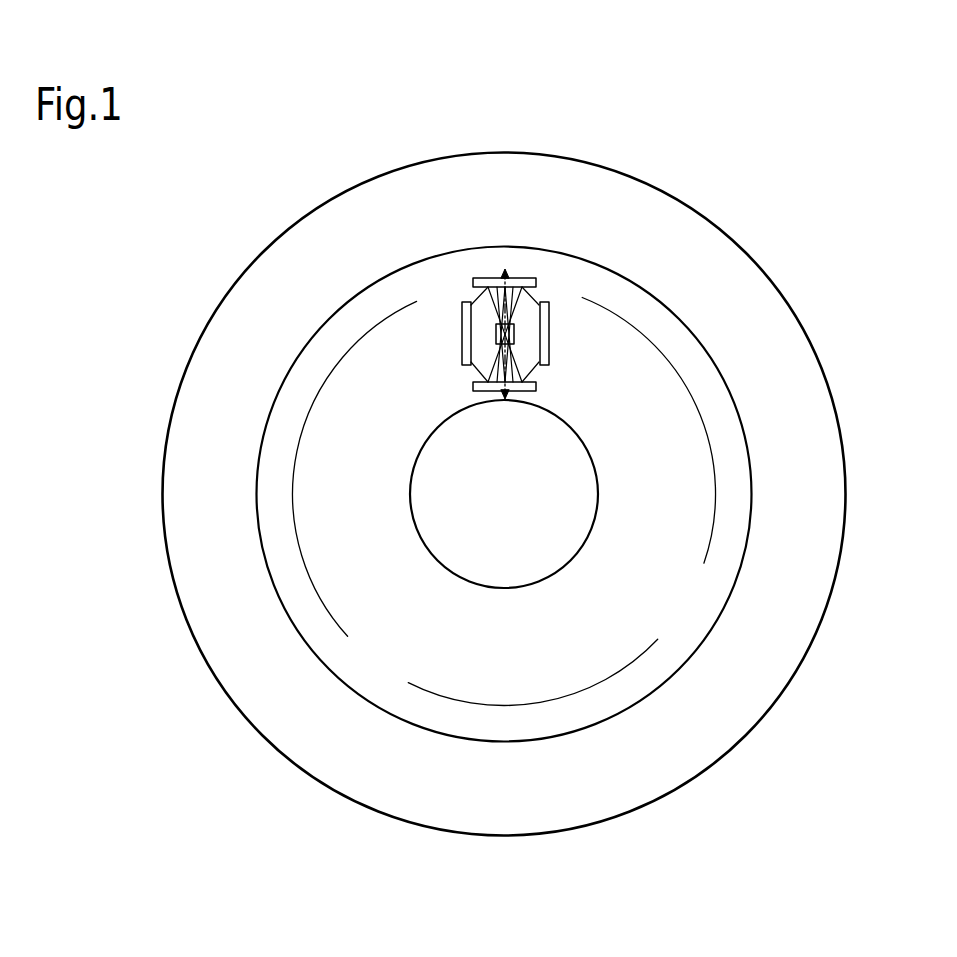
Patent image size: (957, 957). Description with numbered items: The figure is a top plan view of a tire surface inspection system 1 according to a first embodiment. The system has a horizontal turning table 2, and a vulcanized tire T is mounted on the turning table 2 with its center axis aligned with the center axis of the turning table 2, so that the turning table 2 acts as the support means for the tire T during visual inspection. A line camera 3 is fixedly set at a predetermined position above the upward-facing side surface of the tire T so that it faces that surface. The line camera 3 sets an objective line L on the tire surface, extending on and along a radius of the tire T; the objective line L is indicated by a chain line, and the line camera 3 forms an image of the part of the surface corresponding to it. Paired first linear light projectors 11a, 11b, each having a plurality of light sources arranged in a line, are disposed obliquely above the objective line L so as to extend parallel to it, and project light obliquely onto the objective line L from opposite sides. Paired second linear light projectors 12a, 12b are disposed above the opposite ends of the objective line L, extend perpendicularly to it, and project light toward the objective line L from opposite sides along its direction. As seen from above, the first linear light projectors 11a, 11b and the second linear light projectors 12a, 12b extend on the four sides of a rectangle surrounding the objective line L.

The tire surface inspection system 1 is at (356, 118).
The turning table 2 is at (778, 282).
The tire T is at (308, 338).
The line camera 3 is at (514, 329).
The first linear light projector 11a is at (467, 337).
The first linear light projector 11b is at (545, 333).
The second linear light projector 12a is at (485, 283).
The second linear light projector 12b is at (522, 388).
The objective line L is at (507, 363).